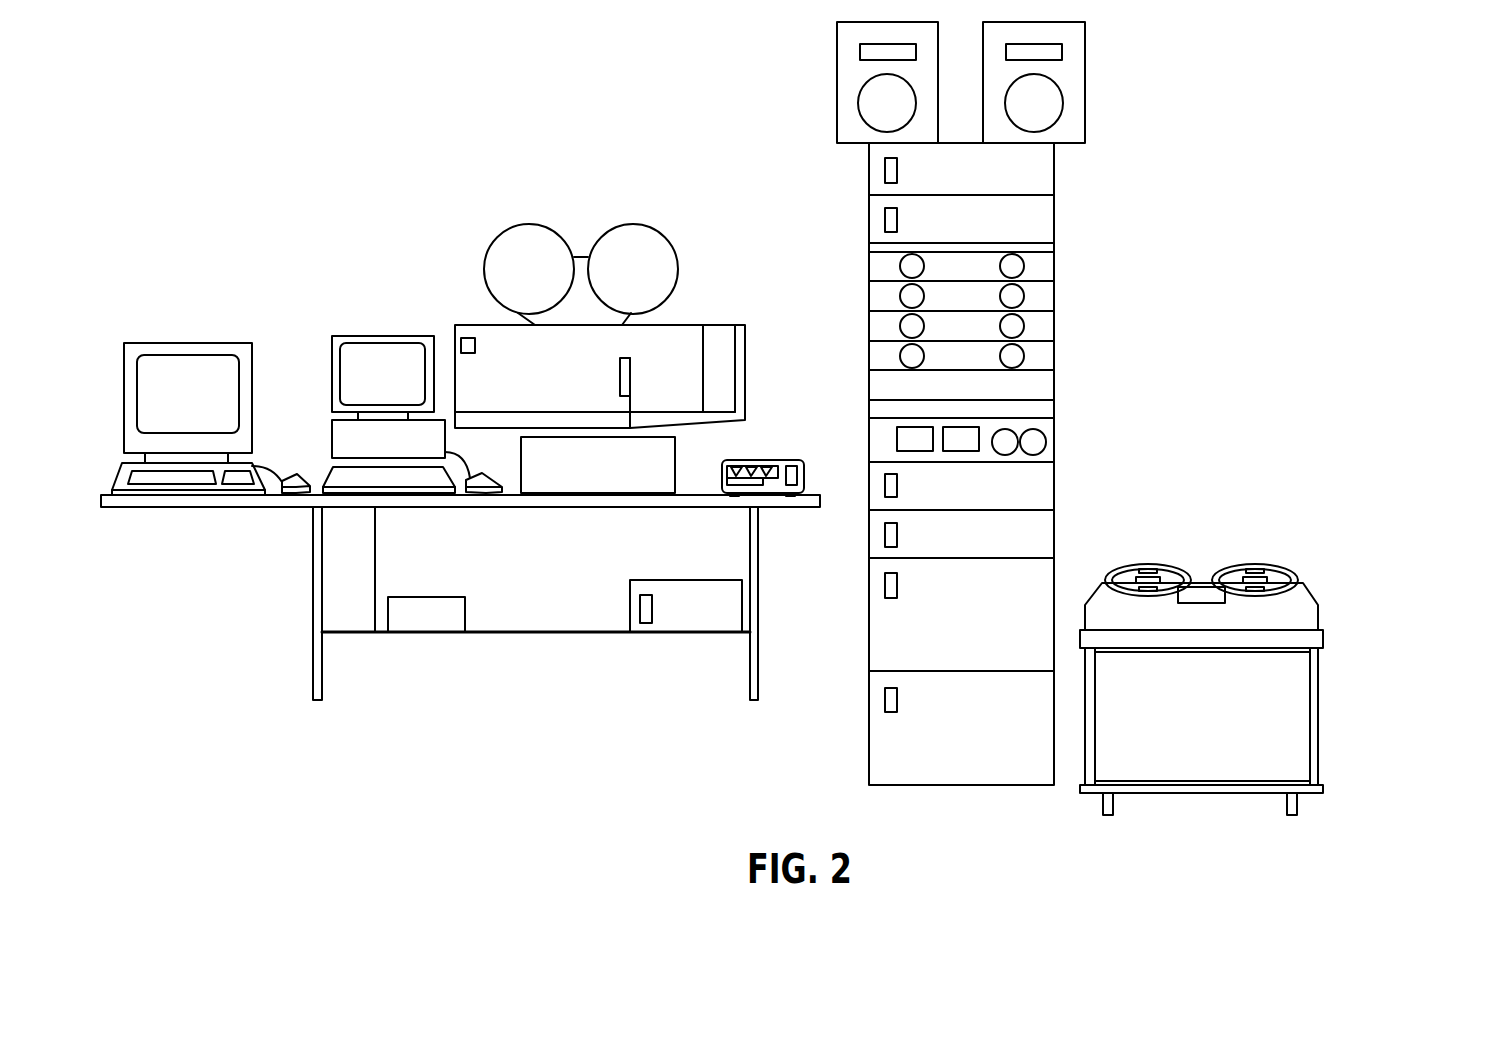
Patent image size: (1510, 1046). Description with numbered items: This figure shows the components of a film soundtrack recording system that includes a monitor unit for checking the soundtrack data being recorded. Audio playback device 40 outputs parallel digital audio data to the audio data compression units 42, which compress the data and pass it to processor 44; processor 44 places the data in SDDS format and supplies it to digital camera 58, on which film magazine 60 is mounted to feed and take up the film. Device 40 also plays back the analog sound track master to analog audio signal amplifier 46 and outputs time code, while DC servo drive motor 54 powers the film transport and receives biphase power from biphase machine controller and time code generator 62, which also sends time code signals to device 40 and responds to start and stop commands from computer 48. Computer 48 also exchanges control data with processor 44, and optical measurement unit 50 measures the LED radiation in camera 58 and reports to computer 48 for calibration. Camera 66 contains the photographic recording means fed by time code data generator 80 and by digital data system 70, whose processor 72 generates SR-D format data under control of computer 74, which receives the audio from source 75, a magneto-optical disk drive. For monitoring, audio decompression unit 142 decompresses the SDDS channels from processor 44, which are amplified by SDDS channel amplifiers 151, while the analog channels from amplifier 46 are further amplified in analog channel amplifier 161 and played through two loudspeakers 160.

The audio playback device 40 is at (1317, 680).
The audio data compression unit 42 is at (868, 640).
The processor 44 is at (1054, 527).
The analog audio signal amplifier 46 is at (1054, 438).
The computer 48 is at (357, 336).
The optical measurement unit 50 is at (720, 480).
The DC servo drive motor 54 is at (630, 582).
The digital camera 58 is at (477, 325).
The film magazine 60 is at (521, 225).
The biphase machine controller and time code generator 62 is at (1054, 413).
The camera 66 is at (528, 482).
The digital data system 70 is at (1054, 173).
The processor 72 is at (338, 551).
The computer 74 is at (203, 343).
The source 75 is at (402, 623).
The time code data generator 80 is at (1054, 213).
The audio decompression unit 142 is at (1054, 477).
The SDDS channel amplifiers 151 is at (1056, 370).
The loudspeakers 160 is at (1085, 42).
The analog channel amplifier 161 is at (1054, 390).